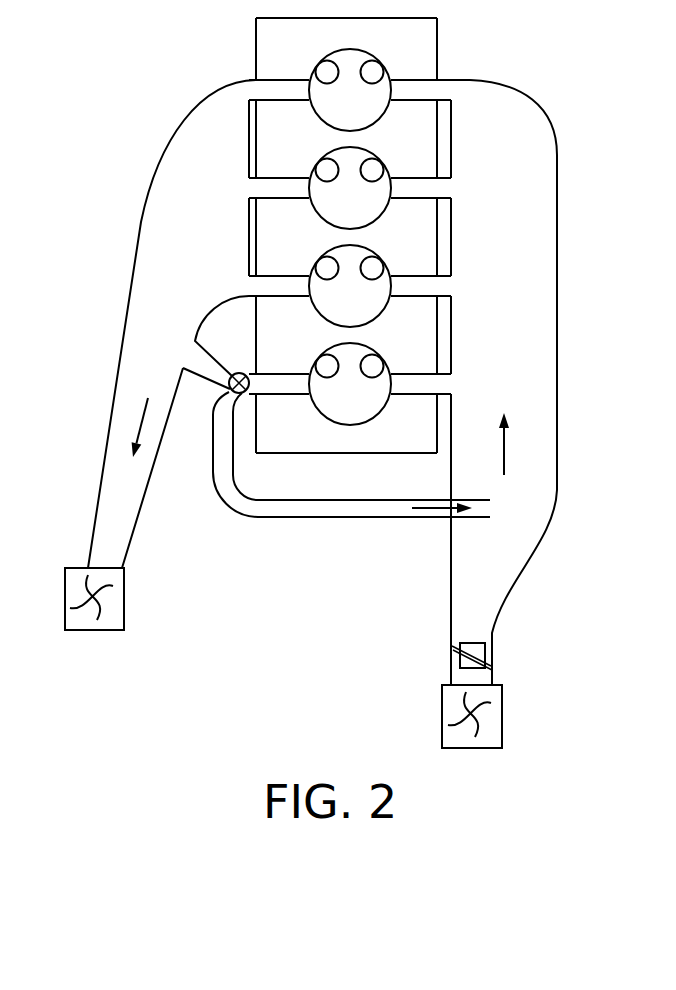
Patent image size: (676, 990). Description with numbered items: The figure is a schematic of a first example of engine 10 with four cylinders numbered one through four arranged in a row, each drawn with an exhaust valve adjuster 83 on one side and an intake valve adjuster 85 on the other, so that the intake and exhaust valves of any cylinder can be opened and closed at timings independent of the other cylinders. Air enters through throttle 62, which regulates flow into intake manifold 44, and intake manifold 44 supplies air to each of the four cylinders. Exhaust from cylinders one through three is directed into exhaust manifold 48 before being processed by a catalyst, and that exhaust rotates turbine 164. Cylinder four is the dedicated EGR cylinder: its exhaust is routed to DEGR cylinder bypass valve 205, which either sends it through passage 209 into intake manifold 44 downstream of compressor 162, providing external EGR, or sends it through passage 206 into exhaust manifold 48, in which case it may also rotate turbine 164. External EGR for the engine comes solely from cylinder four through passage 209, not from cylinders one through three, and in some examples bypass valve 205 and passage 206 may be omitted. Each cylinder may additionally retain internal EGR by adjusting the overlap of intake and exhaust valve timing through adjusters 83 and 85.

The engine 10 is at (256, 38).
The exhaust valve adjuster 83 is at (317, 66).
The intake valve adjuster 85 is at (398, 58).
The exhaust manifold 48 is at (194, 281).
The intake manifold 44 is at (510, 340).
The passage 206 is at (210, 366).
The DEGR cylinder bypass valve 205 is at (242, 373).
The passage 209 is at (268, 518).
The turbine 164 is at (72, 567).
The compressor 162 is at (450, 683).
The throttle 62 is at (485, 650).